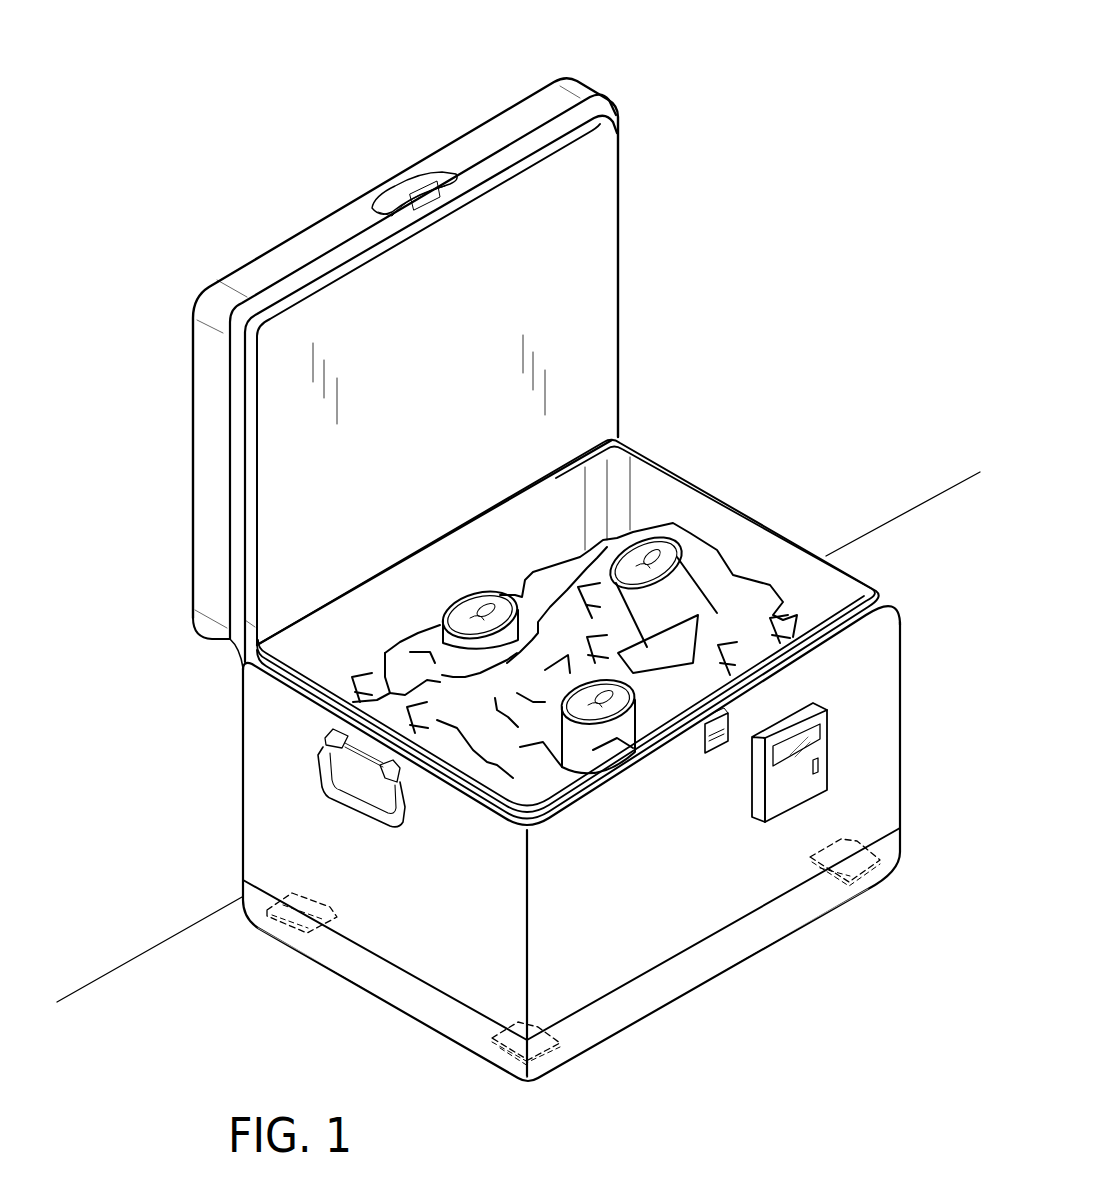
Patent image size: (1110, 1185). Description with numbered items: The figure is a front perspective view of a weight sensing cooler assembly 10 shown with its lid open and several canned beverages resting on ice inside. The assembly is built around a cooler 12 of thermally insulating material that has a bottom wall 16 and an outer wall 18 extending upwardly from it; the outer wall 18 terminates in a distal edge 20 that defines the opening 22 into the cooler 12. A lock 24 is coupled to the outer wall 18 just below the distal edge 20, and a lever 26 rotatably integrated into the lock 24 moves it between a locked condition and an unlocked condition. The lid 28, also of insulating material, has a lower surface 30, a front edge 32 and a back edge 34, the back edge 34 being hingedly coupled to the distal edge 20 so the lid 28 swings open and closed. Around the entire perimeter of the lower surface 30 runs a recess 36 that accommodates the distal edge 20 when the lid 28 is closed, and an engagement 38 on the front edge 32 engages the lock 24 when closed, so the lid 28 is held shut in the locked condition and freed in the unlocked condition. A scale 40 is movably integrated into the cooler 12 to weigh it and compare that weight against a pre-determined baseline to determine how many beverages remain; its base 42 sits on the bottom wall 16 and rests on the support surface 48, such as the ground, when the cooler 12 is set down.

The weight sensing cooler assembly 10 is at (112, 184).
The cooler 12 is at (242, 790).
The bottom wall 16 is at (733, 905).
The outer wall 18 is at (473, 948).
The distal edge 20 is at (747, 507).
The opening 22 is at (640, 480).
The lock 24 is at (722, 752).
The lever 26 is at (707, 752).
The lid 28 is at (588, 88).
The lower surface 30 is at (568, 258).
The front edge 32 is at (292, 253).
The back edge 34 is at (213, 638).
The recess 36 is at (466, 186).
The engagement 38 is at (400, 188).
The scale 40 is at (327, 942).
The base 42 is at (865, 890).
The support surface 48 is at (204, 950).